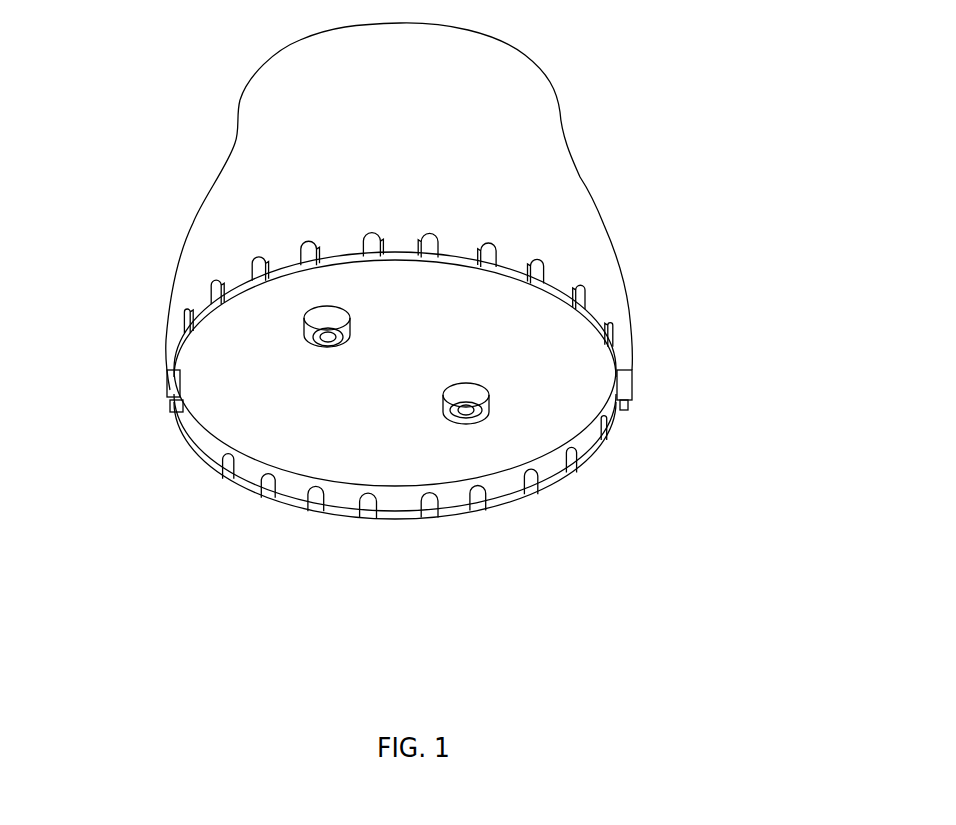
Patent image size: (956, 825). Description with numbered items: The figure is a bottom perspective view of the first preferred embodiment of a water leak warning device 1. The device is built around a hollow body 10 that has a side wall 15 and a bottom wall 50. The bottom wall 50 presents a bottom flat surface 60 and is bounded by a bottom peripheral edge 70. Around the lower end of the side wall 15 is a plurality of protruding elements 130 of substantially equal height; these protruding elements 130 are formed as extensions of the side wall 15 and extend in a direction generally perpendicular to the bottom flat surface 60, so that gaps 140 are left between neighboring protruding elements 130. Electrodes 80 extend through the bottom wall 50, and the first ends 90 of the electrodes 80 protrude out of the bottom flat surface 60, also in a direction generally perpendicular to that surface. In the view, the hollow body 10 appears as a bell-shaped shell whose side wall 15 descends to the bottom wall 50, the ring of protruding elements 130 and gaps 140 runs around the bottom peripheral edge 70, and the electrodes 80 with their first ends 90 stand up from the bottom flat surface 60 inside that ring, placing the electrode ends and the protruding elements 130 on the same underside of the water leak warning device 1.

The water leak warning device 1 is at (152, 137).
The hollow body 10 is at (582, 137).
The side wall 15 is at (393, 172).
The bottom wall 50 is at (505, 370).
The bottom flat surface 60 is at (503, 420).
The bottom peripheral edge 70 is at (400, 485).
The electrodes 80 is at (320, 343).
The first ends 90 is at (320, 343).
The protruding elements 130 is at (547, 463).
The gaps 140 is at (365, 517).